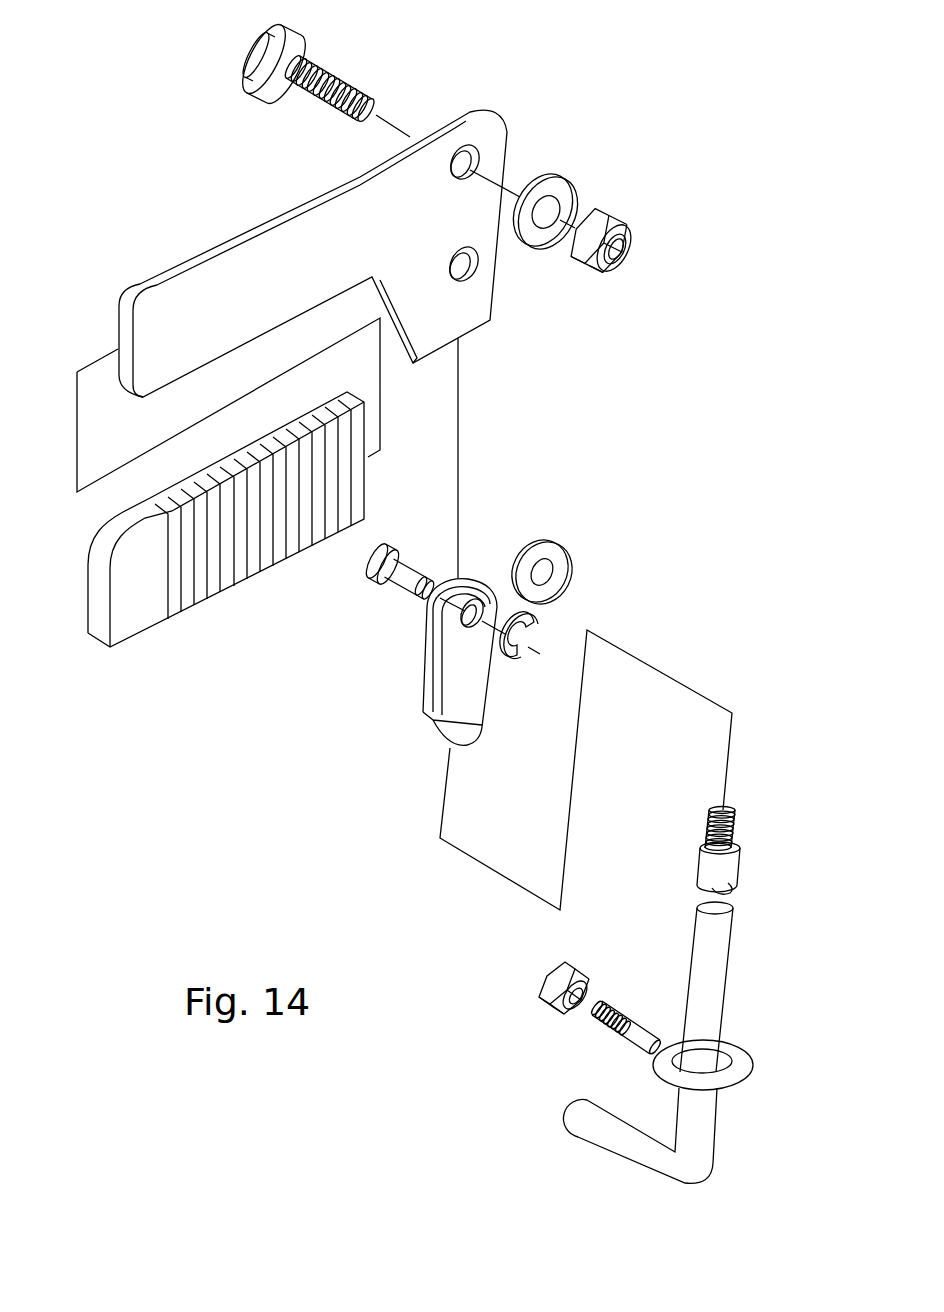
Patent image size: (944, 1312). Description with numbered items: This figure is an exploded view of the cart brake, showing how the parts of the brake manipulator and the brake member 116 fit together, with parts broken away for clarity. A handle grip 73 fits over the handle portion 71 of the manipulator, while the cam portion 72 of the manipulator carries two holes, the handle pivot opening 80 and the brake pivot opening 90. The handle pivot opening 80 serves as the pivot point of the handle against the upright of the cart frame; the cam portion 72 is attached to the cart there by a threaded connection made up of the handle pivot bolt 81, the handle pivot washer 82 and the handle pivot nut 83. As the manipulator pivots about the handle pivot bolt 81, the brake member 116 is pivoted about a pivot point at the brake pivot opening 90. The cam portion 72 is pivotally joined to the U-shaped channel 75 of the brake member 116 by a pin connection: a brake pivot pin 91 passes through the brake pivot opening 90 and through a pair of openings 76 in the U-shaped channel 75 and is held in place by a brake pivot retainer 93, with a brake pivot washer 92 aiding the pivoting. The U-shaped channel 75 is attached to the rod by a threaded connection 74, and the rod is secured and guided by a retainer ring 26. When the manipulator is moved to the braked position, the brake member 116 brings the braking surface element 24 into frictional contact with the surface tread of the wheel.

The handle pivot bolt 81 is at (254, 48).
The cam portion 72 is at (383, 200).
The handle portion 71 is at (197, 298).
The handle pivot opening 80 is at (480, 152).
The brake pivot opening 90 is at (468, 278).
The handle pivot washer 82 is at (567, 193).
The handle pivot nut 83 is at (630, 234).
The handle grip 73 is at (133, 605).
The brake pivot pin 91 is at (383, 582).
The brake pivot washer 92 is at (550, 543).
The brake pivot retainer 93 is at (527, 615).
The U-shaped channel 75 is at (463, 702).
The openings 76 is at (467, 613).
The threaded connection 74 is at (738, 830).
The brake member 116 is at (712, 960).
The retainer ring 26 is at (720, 1080).
The braking surface element 24 is at (597, 1133).